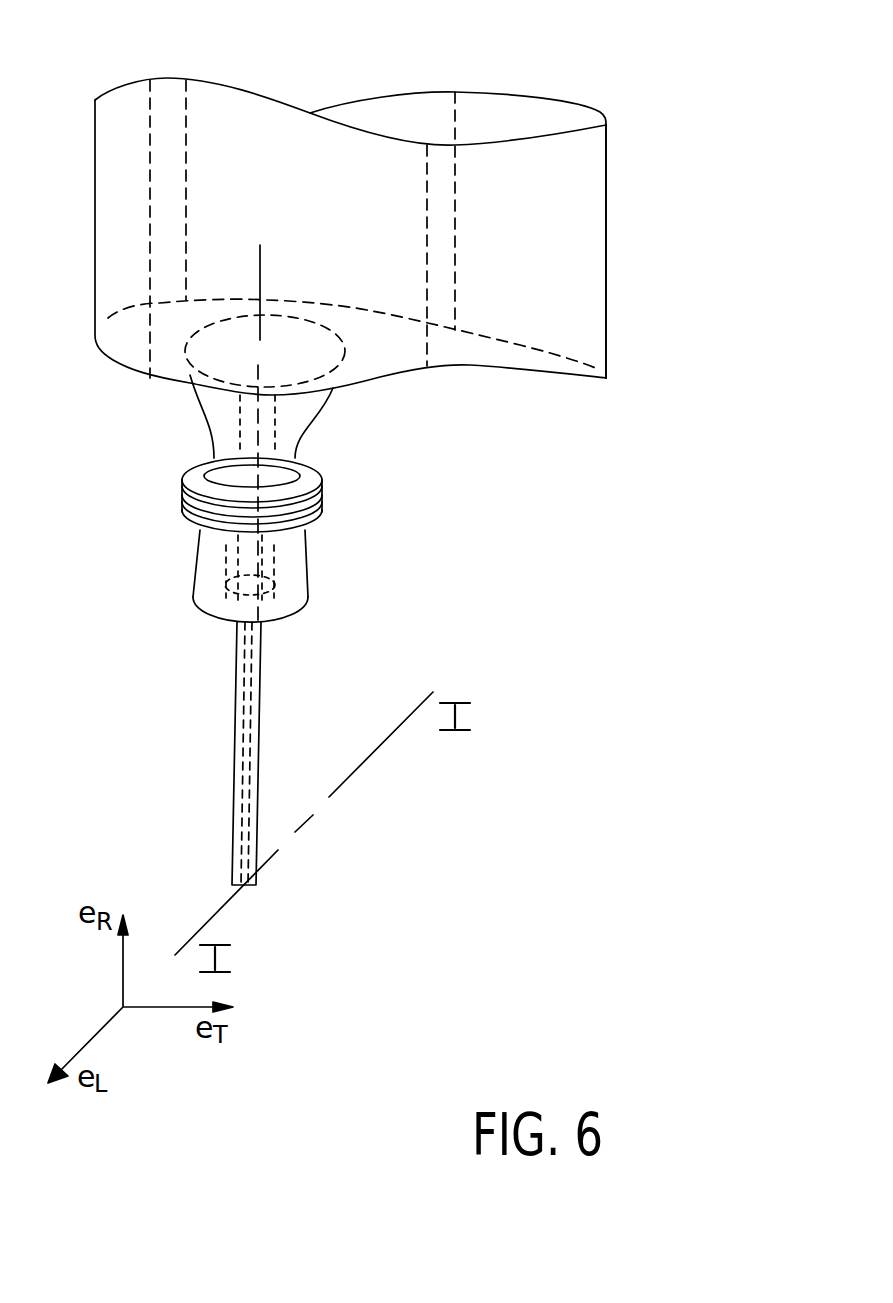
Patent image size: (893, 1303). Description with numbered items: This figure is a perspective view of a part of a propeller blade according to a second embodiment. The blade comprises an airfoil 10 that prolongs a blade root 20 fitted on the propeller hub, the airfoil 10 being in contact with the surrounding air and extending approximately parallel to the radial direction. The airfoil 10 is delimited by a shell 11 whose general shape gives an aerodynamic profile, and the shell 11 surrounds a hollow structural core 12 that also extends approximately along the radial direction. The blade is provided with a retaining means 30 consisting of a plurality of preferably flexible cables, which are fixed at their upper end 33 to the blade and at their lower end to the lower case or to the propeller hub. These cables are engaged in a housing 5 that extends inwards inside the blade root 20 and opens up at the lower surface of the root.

The airfoil 10 is at (606, 212).
The shell 11 is at (606, 295).
The hollow structural core 12 is at (455, 295).
The housing 5 is at (250, 446).
The blade root 20 is at (345, 511).
The upper end 33 is at (240, 580).
The retaining means 30 is at (260, 737).